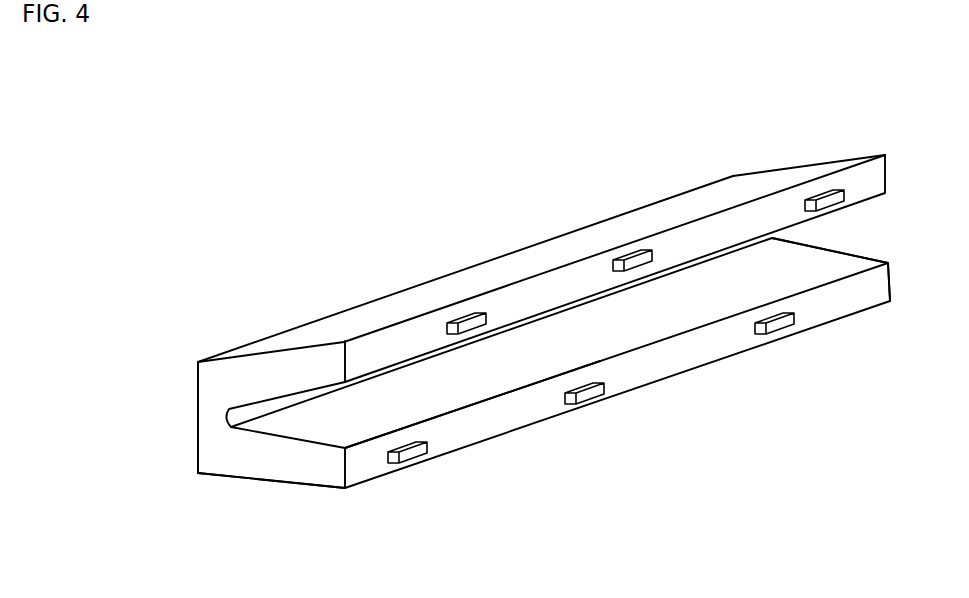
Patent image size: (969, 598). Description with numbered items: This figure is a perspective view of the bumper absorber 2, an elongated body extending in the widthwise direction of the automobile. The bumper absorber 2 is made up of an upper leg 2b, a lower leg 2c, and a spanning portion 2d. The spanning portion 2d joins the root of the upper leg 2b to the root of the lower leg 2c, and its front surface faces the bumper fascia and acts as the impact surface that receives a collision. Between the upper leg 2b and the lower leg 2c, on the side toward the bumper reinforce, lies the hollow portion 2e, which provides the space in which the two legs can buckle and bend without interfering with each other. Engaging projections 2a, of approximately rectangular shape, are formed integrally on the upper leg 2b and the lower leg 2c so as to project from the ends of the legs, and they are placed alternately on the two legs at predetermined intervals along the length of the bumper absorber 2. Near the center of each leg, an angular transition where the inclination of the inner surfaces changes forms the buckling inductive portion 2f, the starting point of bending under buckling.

The bumper absorber 2 is at (518, 225).
The engaging projection 2a is at (590, 392).
The upper leg 2b is at (715, 202).
The lower leg 2c is at (792, 278).
The spanning portion 2d is at (208, 415).
The hollow portion 2e is at (437, 382).
The buckling inductive portion 2f is at (273, 441).